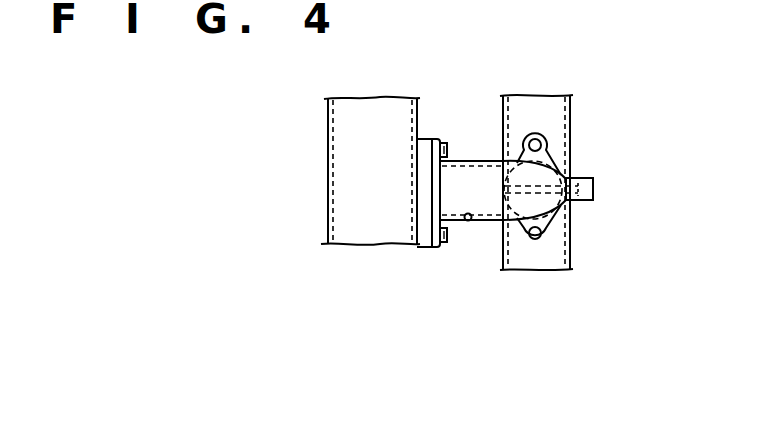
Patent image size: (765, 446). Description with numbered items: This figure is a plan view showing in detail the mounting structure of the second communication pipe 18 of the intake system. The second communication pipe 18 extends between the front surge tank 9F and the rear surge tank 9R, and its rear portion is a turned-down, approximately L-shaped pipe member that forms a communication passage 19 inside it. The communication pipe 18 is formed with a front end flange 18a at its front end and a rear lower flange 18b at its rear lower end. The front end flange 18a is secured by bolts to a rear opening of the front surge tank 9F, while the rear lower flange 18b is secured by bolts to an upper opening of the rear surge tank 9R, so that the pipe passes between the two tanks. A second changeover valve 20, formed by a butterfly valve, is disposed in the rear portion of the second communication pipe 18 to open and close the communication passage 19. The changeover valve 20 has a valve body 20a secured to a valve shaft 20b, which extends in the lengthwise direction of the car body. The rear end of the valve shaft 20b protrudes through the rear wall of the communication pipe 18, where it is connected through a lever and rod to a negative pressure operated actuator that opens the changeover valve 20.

The front surge tank 9F is at (333, 185).
The rear surge tank 9R is at (570, 251).
The second communication pipe 18 is at (483, 160).
The front end flange 18a is at (438, 139).
The rear lower flange 18b is at (555, 151).
The communication passage 19 is at (467, 222).
The second changeover valve 20 is at (575, 219).
The valve body 20a is at (570, 164).
The valve shaft 20b is at (593, 183).